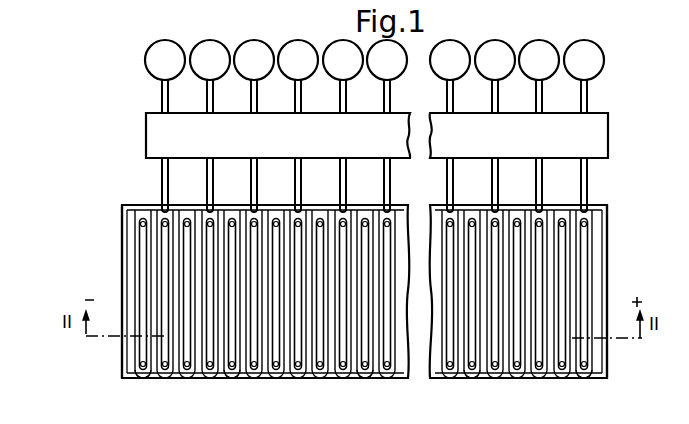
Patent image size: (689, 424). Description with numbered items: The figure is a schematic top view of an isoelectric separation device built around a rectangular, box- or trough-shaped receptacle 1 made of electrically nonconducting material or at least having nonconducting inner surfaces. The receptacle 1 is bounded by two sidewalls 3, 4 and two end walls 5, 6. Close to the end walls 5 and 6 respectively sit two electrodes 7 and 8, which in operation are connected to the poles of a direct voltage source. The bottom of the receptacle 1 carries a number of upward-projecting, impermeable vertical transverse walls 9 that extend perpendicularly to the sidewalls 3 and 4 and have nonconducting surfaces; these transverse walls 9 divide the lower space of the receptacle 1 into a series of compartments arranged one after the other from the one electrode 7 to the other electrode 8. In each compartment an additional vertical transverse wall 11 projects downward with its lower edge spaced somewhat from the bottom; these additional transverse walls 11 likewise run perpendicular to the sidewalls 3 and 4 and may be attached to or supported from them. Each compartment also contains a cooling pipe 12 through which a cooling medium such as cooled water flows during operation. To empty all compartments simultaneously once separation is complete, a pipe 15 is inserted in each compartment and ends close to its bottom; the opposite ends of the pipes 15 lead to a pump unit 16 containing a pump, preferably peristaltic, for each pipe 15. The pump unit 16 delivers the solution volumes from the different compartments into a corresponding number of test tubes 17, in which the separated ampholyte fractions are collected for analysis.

The receptacle 1 is at (603, 229).
The sidewall 3 is at (322, 205).
The sidewall 4 is at (330, 380).
The end wall 5 is at (125, 261).
The end wall 6 is at (606, 284).
The electrode 7 is at (128, 290).
The electrode 8 is at (593, 264).
The transverse walls 9 is at (205, 380).
The additional transverse walls 11 is at (150, 380).
The cooling pipe 12 is at (143, 219).
The pipe 15 is at (163, 177).
The pump unit 16 is at (600, 147).
The test tubes 17 is at (299, 47).